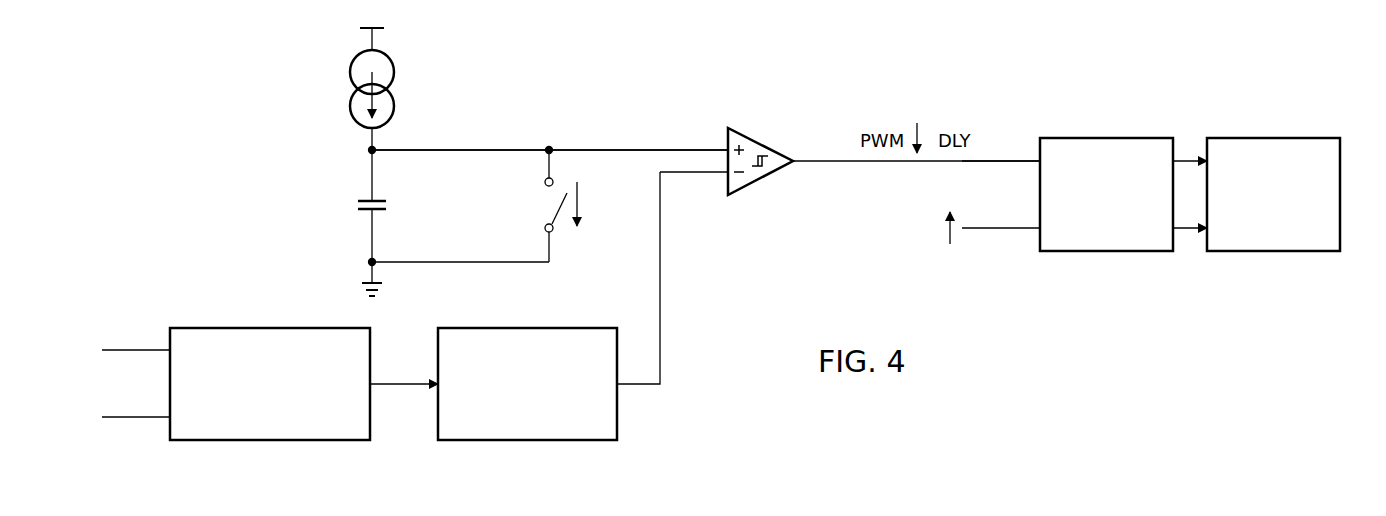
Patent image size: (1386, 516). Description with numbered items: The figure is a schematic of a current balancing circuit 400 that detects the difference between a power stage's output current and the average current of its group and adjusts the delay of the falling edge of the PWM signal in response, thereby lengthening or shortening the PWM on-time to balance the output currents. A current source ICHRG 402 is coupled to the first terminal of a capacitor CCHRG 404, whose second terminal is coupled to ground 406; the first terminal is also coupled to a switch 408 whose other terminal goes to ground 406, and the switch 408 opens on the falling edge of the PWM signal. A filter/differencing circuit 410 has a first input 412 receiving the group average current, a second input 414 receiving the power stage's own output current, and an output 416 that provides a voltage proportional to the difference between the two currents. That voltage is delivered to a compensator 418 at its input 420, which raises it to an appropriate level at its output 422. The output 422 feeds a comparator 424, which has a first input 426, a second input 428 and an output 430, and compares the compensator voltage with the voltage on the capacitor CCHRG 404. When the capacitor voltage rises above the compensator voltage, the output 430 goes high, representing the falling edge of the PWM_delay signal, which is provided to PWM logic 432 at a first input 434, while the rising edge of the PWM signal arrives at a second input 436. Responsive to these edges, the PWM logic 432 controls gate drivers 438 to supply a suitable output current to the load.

The current balancing circuit 400 is at (952, 70).
The current source ICHRG 402 is at (348, 72).
The capacitor CCHRG 404 is at (358, 205).
The ground 406 is at (360, 285).
The switch 408 is at (548, 208).
The filter/differencing circuit 410 is at (270, 442).
The first input 412 is at (138, 348).
The second input 414 is at (138, 420).
The output 416 is at (380, 378).
The compensator 418 is at (525, 442).
The input 420 is at (430, 395).
The output 422 is at (625, 393).
The comparator 424 is at (762, 182).
The first input 426 is at (720, 142).
The second input 428 is at (718, 182).
The output 430 is at (803, 152).
The PWM logic 432 is at (1106, 138).
The first input 434 is at (1032, 153).
The second input 436 is at (1032, 237).
The gate drivers 438 is at (1274, 138).